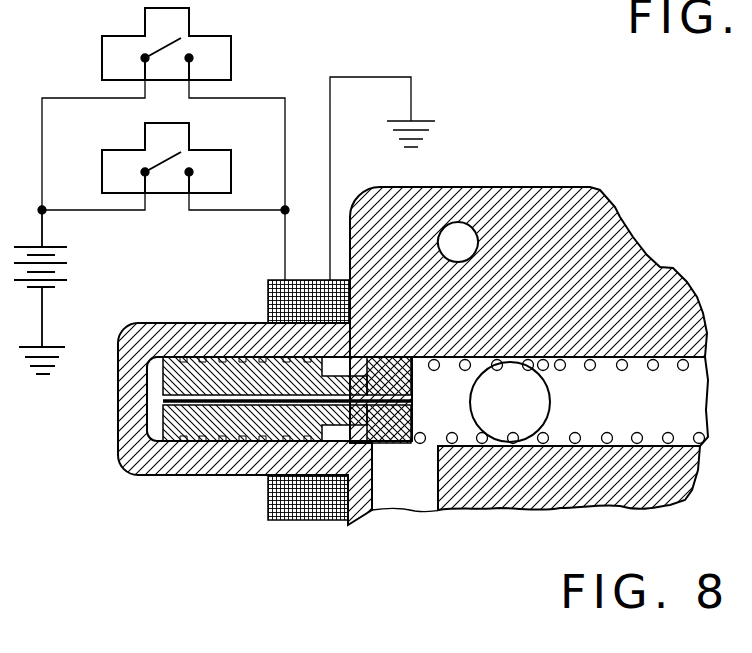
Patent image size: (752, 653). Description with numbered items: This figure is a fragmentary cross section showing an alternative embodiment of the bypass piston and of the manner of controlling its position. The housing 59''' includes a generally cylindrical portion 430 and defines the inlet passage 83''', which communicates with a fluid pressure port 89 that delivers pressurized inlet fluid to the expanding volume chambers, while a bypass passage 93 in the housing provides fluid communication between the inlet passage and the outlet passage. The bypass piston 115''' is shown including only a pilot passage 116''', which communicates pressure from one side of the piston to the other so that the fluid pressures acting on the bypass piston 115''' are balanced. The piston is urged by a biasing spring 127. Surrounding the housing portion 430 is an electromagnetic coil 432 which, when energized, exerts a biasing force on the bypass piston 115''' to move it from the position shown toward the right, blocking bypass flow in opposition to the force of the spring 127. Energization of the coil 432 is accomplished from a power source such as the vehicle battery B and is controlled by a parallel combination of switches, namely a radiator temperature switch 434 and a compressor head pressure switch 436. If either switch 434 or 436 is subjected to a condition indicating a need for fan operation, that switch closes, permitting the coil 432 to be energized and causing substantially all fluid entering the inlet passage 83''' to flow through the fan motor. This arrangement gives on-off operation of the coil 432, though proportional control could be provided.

The radiator temperature switch 434 is at (204, 34).
The compressor head pressure switch 436 is at (203, 148).
The vehicle battery B is at (64, 269).
The electromagnetic coil 432 is at (268, 298).
The generally cylindrical portion 430 is at (130, 445).
The housing 59''' is at (543, 316).
The inlet passage 83''' is at (569, 343).
The biasing spring 127 is at (636, 363).
The bypass piston 115''' is at (410, 376).
The pilot passage 116''' is at (317, 399).
The fluid pressure port 89 is at (510, 402).
The bypass passage 93 is at (442, 477).